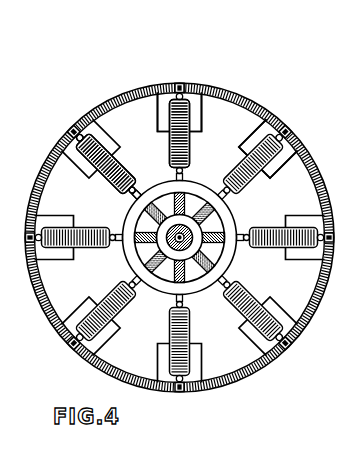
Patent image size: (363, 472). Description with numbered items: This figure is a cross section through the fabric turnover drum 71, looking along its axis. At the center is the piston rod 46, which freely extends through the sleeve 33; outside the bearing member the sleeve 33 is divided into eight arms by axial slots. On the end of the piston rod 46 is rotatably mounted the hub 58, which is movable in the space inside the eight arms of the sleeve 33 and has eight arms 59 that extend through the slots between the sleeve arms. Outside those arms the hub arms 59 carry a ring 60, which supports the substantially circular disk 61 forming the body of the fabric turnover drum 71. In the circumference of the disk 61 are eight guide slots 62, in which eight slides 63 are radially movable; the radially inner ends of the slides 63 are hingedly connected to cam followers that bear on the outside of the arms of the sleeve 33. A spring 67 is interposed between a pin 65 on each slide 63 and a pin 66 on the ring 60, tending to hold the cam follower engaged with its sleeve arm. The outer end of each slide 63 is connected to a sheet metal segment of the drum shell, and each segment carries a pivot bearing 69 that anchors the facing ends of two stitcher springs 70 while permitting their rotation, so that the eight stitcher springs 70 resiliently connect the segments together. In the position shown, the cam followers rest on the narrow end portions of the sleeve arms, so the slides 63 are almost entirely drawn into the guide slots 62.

The sleeve 33 is at (226, 228).
The piston rod 46 is at (184, 251).
The hub 58 is at (155, 243).
The arms 59 is at (194, 196).
The ring 60 is at (238, 258).
The disk 61 is at (249, 119).
The guide slots 62 is at (194, 132).
The slides 63 is at (202, 125).
The pin 65 is at (87, 141).
The pin 66 is at (128, 191).
The spring 67 is at (125, 172).
The pivot bearing 69 is at (180, 84).
The stitcher springs 70 is at (122, 90).
The fabric turnover drum 71 is at (311, 152).